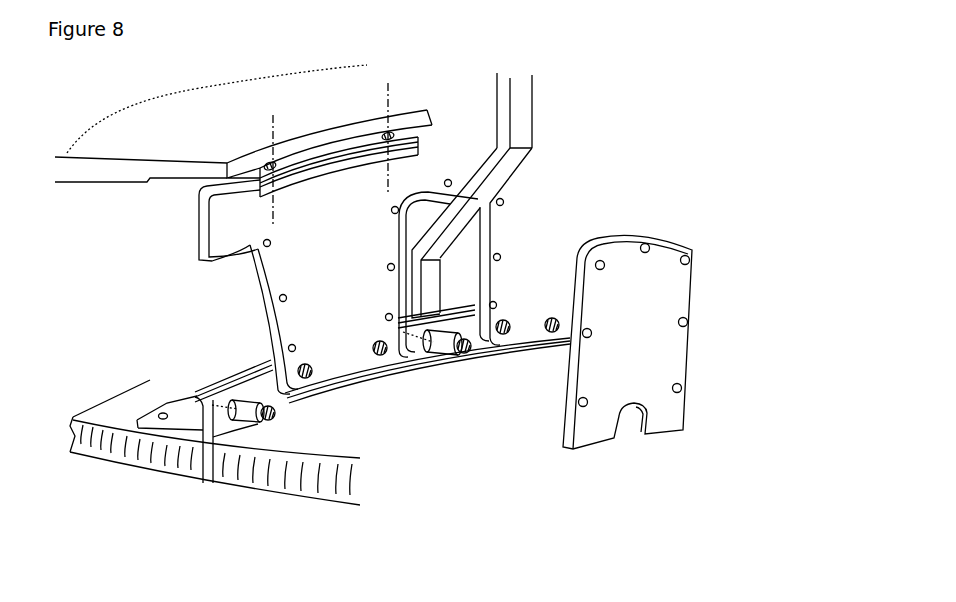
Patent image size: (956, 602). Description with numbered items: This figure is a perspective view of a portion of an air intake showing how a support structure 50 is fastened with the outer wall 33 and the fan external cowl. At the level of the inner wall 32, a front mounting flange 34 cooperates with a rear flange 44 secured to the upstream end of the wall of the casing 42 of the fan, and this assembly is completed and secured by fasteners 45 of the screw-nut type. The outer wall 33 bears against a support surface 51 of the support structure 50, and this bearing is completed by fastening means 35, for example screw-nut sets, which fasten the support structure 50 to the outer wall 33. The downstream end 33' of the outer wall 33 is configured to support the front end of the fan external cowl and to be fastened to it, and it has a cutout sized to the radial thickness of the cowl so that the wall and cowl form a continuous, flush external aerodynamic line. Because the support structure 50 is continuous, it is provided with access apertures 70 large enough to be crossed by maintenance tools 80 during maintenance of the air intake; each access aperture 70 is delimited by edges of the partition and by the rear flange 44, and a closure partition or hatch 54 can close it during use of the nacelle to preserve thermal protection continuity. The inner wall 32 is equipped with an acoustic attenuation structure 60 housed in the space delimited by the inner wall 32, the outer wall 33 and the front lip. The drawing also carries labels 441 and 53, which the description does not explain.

The inner wall 32 is at (150, 470).
The outer wall 33 is at (141, 140).
The downstream end 33' is at (249, 132).
The front mounting flange 34 is at (171, 405).
The fastening means 35 is at (258, 156).
The casing 42 is at (248, 498).
The rear flange 44 is at (276, 410).
The rail 441 is at (242, 367).
The fasteners 45 is at (500, 348).
The support structure 50 is at (375, 190).
The support surface 51 is at (188, 203).
The web panel 53 is at (377, 287).
The closure partition 54 is at (627, 342).
The acoustic attenuation structure 60 is at (90, 449).
The access apertures 70 is at (503, 223).
The maintenance tools 80 is at (520, 110).